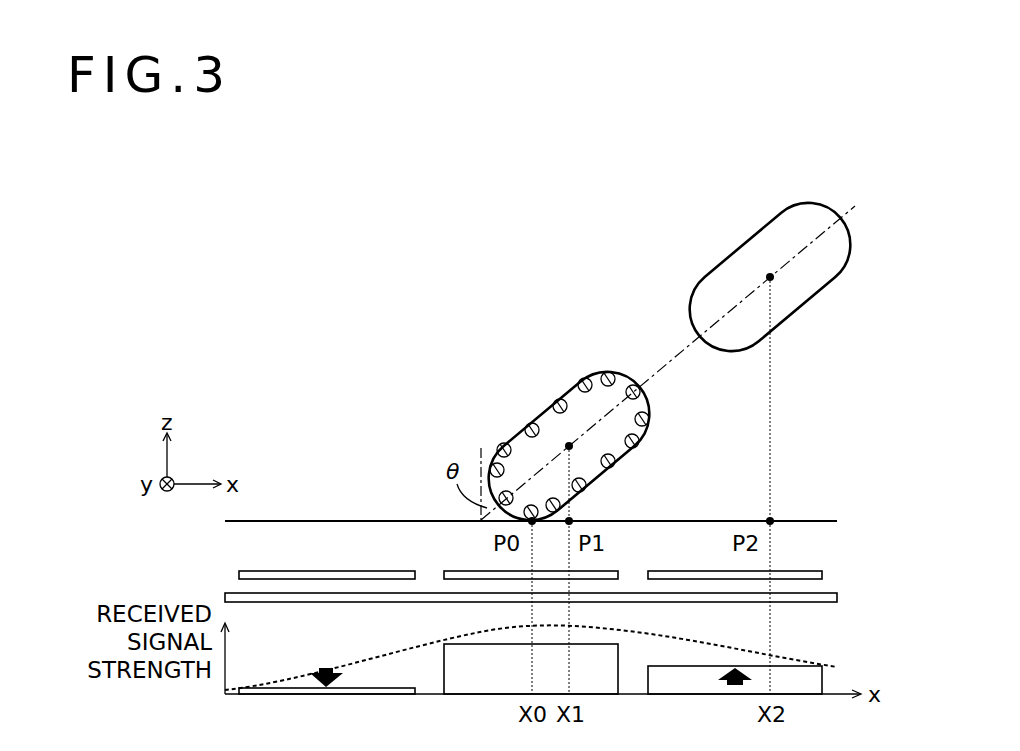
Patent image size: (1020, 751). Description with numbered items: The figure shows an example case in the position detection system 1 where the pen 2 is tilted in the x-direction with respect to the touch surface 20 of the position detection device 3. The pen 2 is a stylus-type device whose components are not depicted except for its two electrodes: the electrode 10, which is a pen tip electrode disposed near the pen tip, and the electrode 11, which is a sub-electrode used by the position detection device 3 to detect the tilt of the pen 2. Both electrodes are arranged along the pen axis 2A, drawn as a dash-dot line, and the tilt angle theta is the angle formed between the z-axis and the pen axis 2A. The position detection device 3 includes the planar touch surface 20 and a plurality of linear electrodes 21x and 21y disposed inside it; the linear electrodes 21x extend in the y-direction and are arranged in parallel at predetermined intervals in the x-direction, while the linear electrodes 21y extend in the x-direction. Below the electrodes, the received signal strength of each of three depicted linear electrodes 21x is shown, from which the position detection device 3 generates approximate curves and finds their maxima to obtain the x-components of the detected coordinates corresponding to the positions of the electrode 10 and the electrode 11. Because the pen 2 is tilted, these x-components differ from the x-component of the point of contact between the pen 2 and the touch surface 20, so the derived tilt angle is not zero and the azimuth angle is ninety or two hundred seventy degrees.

The position detection system 1 is at (783, 145).
The pen 2 is at (716, 186).
The pen axis 2A is at (668, 362).
The electrode 10 is at (549, 408).
The electrode 11 is at (742, 244).
The touch surface 20 is at (821, 520).
The position detection device 3 is at (838, 505).
The linear electrodes 21x is at (814, 571).
The linear electrodes 21y is at (228, 593).